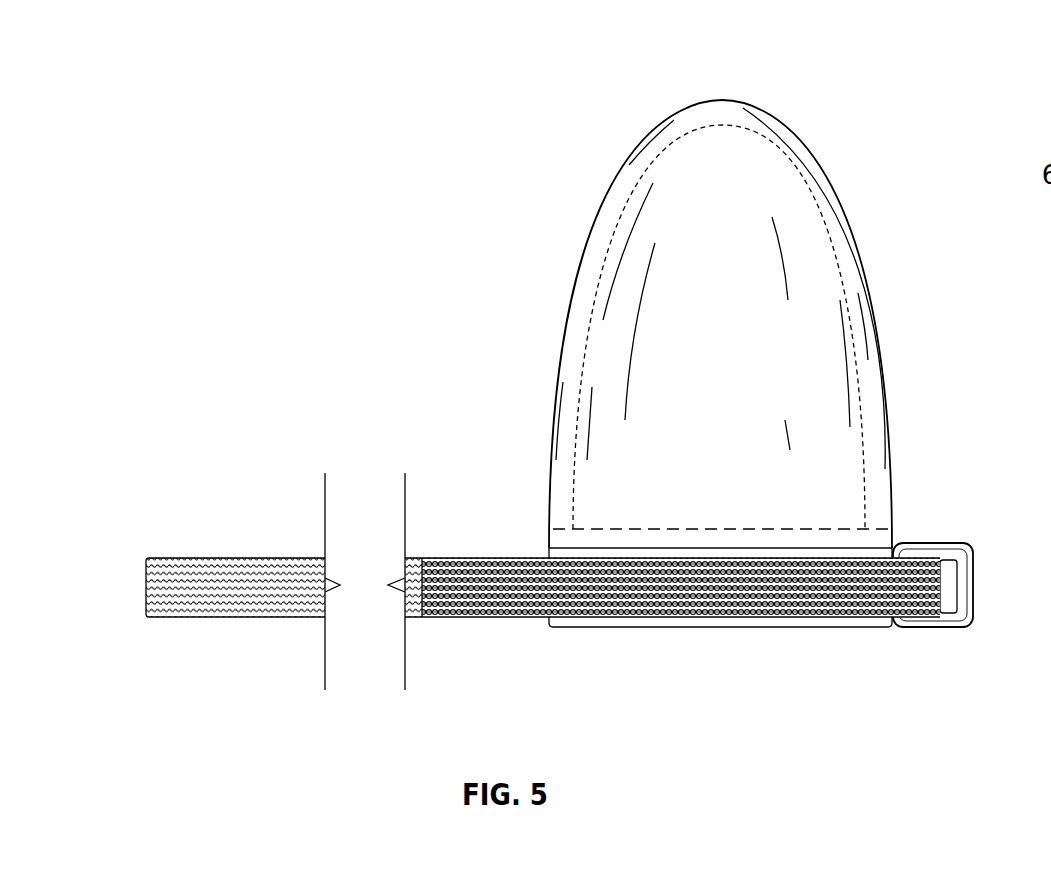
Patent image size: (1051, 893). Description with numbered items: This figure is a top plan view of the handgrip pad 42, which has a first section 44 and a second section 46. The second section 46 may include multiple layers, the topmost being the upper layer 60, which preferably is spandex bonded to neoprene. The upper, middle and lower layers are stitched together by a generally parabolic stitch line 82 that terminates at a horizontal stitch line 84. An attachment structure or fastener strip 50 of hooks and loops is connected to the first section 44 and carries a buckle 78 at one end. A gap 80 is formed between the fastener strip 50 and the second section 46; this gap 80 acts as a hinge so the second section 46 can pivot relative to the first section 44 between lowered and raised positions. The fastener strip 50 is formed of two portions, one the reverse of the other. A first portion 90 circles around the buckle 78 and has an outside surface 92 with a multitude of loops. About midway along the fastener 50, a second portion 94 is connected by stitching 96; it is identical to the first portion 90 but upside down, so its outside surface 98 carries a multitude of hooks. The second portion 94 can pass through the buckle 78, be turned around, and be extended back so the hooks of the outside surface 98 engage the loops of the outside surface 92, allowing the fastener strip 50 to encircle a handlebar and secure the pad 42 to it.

The handgrip pad 42 is at (814, 88).
The first section 44 is at (572, 632).
The second section 46 is at (875, 321).
The fastener strip 50 is at (543, 578).
The upper layer 60 is at (797, 252).
The buckle 78 is at (963, 590).
The gap 80 is at (855, 553).
The parabolic stitch line 82 is at (642, 186).
The horizontal stitch line 84 is at (818, 529).
The first portion 90 is at (632, 630).
The outside surface 92 is at (816, 598).
The second portion 94 is at (153, 555).
The stitching 96 is at (423, 560).
The outside surface 98 is at (240, 575).